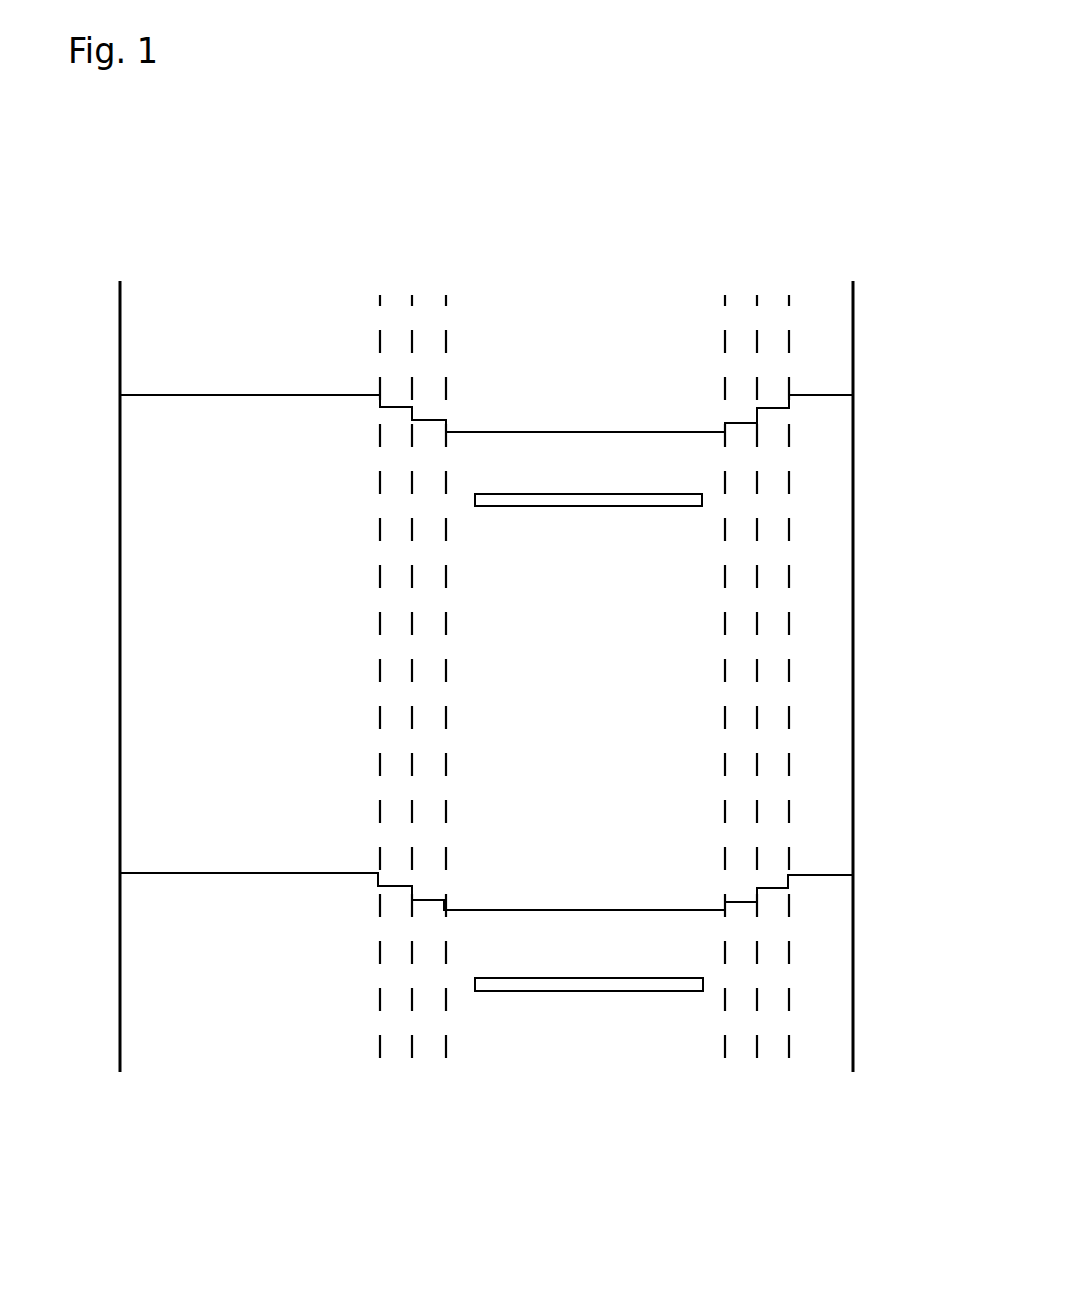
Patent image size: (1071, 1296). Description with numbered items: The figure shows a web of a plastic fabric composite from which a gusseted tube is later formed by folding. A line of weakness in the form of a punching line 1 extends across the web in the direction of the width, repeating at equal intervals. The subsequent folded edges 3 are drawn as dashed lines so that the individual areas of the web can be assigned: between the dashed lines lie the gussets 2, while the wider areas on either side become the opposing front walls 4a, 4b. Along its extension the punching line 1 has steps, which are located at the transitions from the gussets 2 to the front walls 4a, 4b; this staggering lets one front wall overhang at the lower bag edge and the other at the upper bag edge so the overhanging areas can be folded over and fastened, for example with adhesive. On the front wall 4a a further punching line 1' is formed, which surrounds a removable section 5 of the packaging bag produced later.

The punching line 1 is at (585, 394).
The further punching line 1' is at (588, 429).
The gussets 2 is at (360, 1089).
The folded edges 3 is at (448, 340).
The front wall 4a is at (652, 647).
The front wall 4b is at (210, 643).
The removable section 5 is at (682, 500).